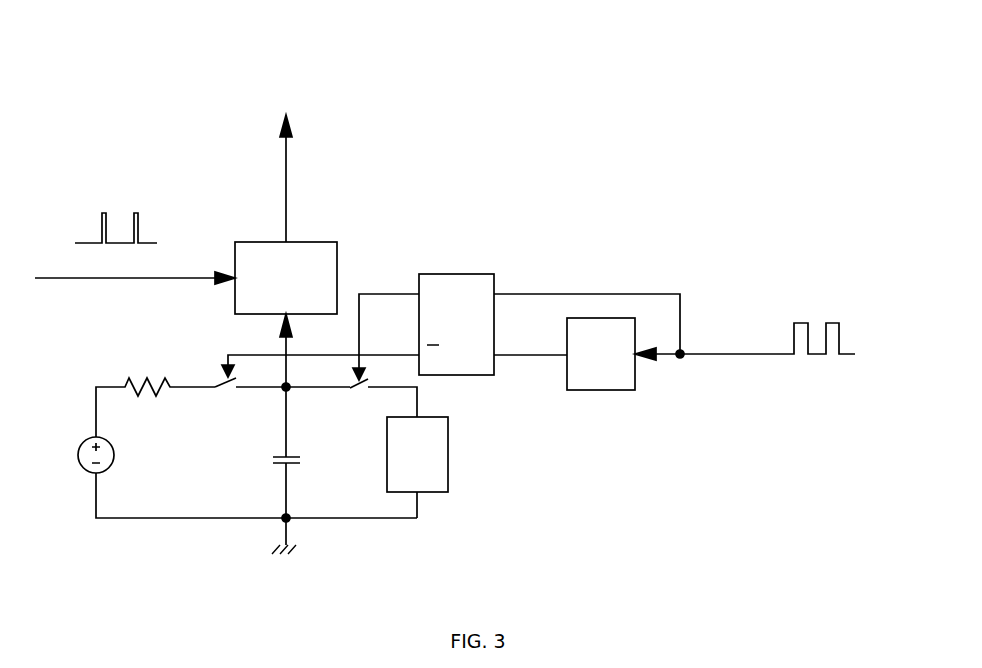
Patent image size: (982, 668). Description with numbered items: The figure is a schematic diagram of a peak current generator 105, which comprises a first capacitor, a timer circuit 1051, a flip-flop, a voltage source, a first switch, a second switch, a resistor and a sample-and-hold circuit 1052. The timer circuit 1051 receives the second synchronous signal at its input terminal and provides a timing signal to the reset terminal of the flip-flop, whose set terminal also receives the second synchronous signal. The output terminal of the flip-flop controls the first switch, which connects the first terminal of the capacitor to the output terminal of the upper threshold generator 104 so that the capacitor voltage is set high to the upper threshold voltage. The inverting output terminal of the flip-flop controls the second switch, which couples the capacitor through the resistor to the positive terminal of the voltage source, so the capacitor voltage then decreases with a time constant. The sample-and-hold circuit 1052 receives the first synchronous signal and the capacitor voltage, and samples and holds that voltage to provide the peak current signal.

The peak current generator 105 is at (515, 65).
The sample-and-hold circuit 1052 is at (237, 316).
The timer circuit 1051 is at (598, 391).
The upper threshold generator 104 is at (417, 454).